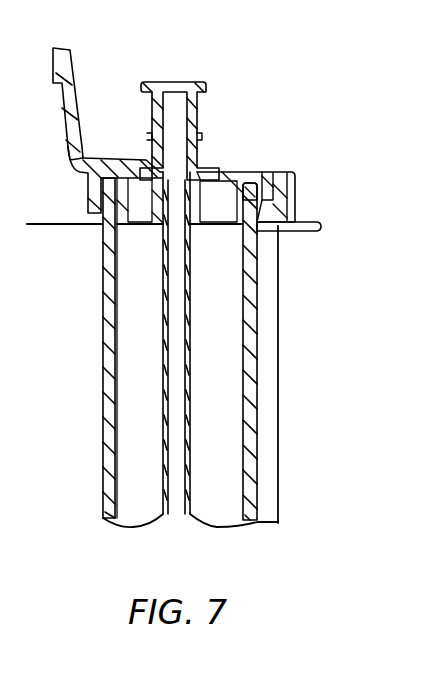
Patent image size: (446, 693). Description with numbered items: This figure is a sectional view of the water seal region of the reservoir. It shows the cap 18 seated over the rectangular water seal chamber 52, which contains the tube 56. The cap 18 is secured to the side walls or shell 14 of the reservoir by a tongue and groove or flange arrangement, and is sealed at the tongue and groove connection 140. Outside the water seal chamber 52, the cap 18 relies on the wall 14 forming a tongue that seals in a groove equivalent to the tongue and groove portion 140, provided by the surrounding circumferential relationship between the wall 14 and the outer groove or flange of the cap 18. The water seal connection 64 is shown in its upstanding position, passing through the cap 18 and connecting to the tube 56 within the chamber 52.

The side walls or shell 14 is at (257, 452).
The cap 18 is at (227, 173).
The rectangular water seal chamber 52 is at (220, 521).
The tube 56 is at (163, 503).
The water seal connection 64 is at (191, 82).
The tongue and groove connection 140 is at (252, 190).